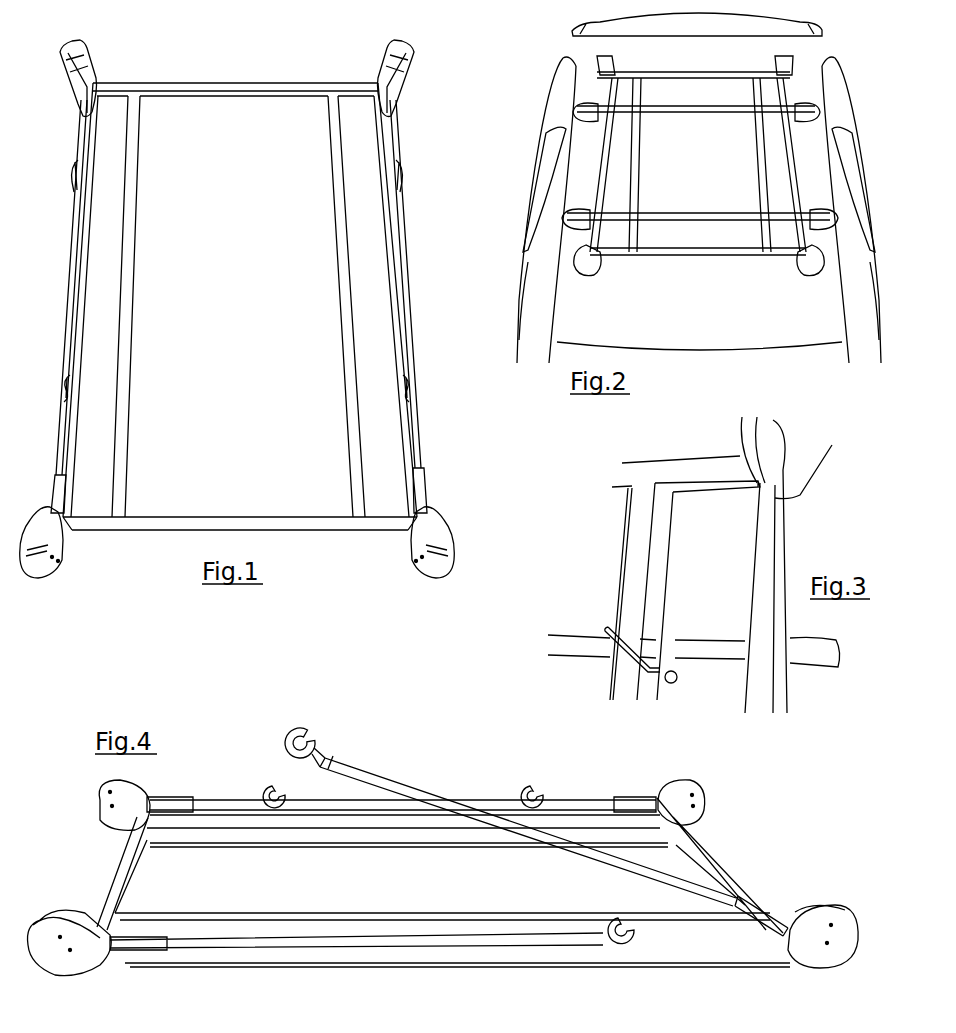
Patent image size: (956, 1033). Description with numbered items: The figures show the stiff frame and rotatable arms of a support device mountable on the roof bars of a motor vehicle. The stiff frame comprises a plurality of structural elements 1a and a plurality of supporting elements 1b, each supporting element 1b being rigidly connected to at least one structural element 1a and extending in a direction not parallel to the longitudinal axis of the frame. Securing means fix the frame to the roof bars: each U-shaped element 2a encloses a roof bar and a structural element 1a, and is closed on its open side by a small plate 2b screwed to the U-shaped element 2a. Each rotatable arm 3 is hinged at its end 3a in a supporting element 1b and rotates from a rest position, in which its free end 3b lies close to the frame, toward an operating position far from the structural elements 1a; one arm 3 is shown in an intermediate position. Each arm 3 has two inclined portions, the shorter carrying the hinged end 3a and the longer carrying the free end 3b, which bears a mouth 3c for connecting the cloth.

In FIG. 1, the structural element 1a is at (242, 80).
In FIG. 3, the structural element 1a is at (722, 468).
In FIG. 4, the structural element 1a is at (103, 895).
In FIG. 1, the supporting element 1b is at (97, 60).
In FIG. 3, the supporting element 1b is at (808, 456).
In FIG. 4, the supporting element 1b is at (123, 815).
In FIG. 3, the U-shaped element 2a is at (666, 673).
In FIG. 3, the small plate 2b is at (678, 686).
In FIG. 1, the rotatable arm 3 is at (67, 245).
In FIG. 4, the rotatable arm 3 is at (215, 797).
In FIG. 4, the hinged end 3a is at (791, 905).
In FIG. 4, the free end 3b is at (340, 760).
In FIG. 4, the mouth 3c is at (273, 782).